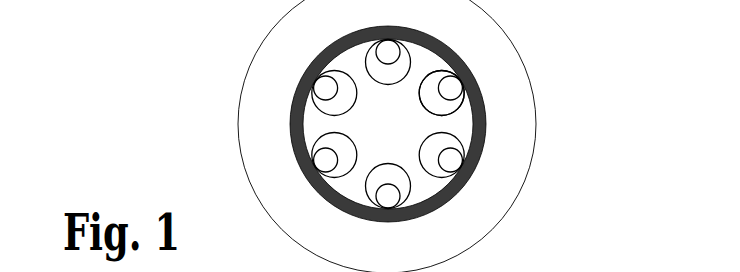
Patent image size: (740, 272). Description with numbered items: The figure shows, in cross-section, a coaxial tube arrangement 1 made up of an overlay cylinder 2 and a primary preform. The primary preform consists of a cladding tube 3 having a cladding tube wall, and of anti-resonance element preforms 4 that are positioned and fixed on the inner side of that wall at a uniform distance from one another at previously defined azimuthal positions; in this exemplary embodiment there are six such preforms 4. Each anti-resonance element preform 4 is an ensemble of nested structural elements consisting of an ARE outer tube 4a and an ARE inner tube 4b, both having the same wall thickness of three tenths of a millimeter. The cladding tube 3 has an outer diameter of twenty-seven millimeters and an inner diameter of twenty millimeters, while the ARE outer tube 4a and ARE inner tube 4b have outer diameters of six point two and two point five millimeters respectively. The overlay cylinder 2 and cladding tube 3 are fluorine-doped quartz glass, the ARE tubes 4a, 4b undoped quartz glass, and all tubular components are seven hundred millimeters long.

The coaxial tube arrangement 1 is at (533, 50).
The overlay cylinder 2 is at (482, 202).
The cladding tube 3 is at (485, 137).
The anti-resonance element preform 4 is at (313, 87).
The ARE outer tube 4a is at (445, 92).
The ARE inner tube 4b is at (462, 105).